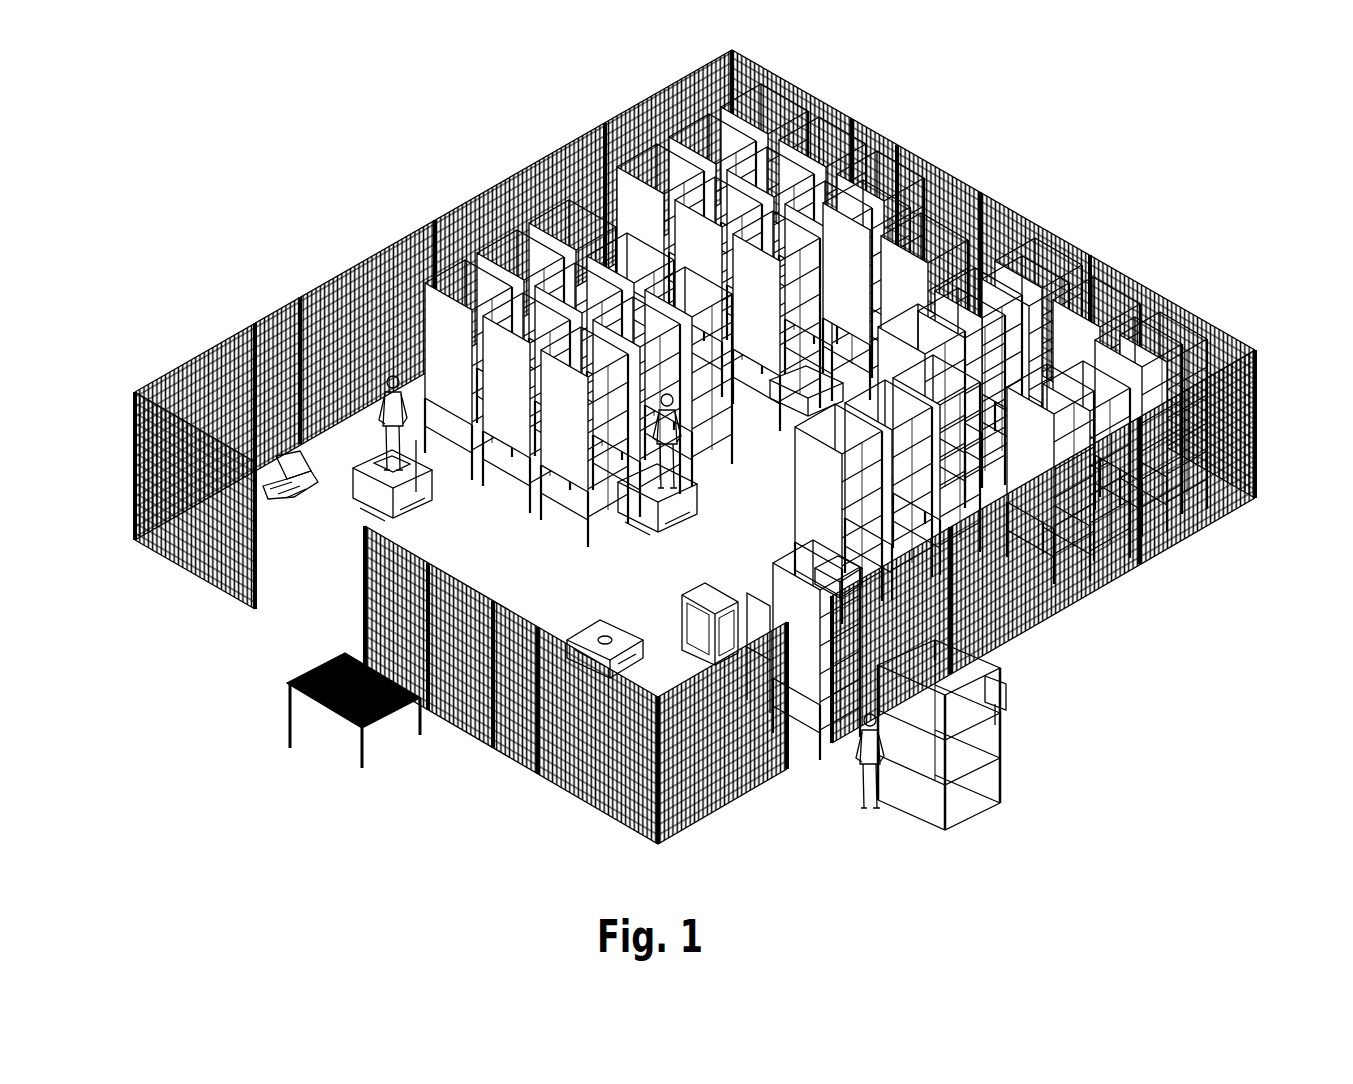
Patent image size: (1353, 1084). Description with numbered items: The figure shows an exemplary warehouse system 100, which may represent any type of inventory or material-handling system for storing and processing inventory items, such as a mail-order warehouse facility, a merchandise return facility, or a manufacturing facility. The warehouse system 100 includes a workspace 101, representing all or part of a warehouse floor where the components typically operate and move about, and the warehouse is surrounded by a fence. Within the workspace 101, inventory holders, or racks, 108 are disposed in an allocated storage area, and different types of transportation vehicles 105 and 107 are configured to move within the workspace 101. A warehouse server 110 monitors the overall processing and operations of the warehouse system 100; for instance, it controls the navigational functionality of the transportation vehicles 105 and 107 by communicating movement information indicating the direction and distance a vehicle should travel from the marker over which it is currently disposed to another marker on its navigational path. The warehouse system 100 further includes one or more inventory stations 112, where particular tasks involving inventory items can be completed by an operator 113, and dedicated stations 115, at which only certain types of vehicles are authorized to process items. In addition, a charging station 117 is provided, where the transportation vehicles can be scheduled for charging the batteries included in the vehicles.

The warehouse system 100 is at (238, 184).
The workspace 101 is at (766, 487).
The transportation vehicle 105 is at (373, 493).
The transportation vehicle 107 is at (599, 627).
The inventory holder 108 is at (506, 430).
The warehouse server 110 is at (304, 462).
The inventory station 112 is at (948, 684).
The operator 113 is at (860, 760).
The dedicated station 115 is at (289, 688).
The charging station 117 is at (696, 588).